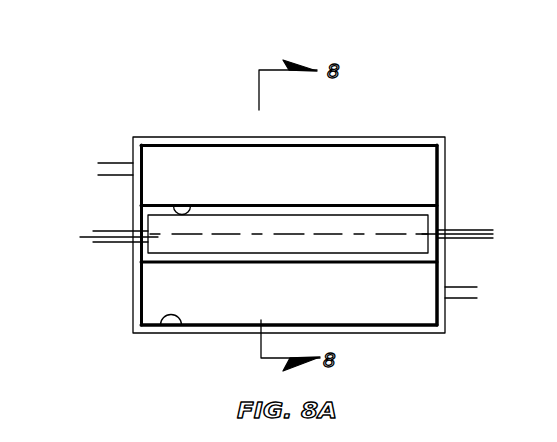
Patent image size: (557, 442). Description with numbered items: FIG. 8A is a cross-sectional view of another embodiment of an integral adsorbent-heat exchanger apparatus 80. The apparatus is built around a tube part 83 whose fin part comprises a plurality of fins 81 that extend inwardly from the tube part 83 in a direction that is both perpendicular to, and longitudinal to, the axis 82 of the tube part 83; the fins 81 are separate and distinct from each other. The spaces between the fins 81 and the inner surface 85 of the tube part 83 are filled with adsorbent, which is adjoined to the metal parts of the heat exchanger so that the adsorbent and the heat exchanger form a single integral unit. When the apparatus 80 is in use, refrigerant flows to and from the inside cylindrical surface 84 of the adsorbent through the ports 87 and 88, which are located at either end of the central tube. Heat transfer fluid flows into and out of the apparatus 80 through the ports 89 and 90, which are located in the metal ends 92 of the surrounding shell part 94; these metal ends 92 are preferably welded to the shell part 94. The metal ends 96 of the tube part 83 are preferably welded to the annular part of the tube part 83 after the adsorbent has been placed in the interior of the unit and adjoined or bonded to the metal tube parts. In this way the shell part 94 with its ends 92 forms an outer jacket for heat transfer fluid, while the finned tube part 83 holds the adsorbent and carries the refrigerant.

The adsorbent-heat exchanger apparatus 80 is at (134, 107).
The fins 81 is at (270, 150).
The axis of the tube part 82 is at (292, 233).
The tube part 83 is at (227, 325).
The inside cylindrical surface 84 is at (190, 206).
The inner surface of the tube part 85 is at (183, 320).
The port 87 is at (102, 242).
The port 88 is at (455, 229).
The port 89 is at (112, 163).
The port 90 is at (460, 299).
The metal ends of the shell part 92 is at (130, 220).
The shell part 94 is at (175, 138).
The metal ends of the tube part 96 is at (438, 182).